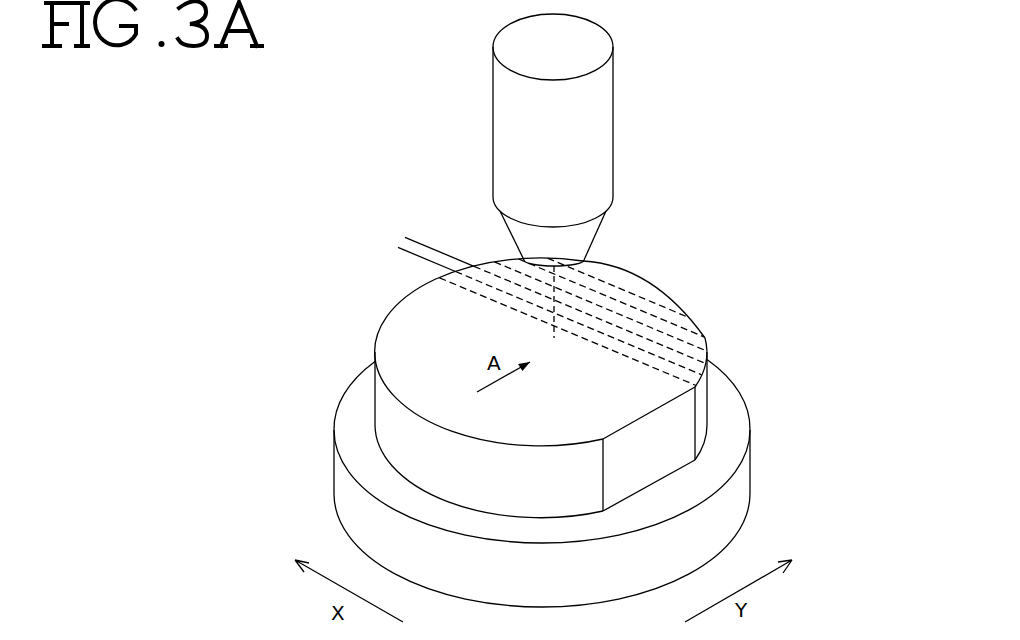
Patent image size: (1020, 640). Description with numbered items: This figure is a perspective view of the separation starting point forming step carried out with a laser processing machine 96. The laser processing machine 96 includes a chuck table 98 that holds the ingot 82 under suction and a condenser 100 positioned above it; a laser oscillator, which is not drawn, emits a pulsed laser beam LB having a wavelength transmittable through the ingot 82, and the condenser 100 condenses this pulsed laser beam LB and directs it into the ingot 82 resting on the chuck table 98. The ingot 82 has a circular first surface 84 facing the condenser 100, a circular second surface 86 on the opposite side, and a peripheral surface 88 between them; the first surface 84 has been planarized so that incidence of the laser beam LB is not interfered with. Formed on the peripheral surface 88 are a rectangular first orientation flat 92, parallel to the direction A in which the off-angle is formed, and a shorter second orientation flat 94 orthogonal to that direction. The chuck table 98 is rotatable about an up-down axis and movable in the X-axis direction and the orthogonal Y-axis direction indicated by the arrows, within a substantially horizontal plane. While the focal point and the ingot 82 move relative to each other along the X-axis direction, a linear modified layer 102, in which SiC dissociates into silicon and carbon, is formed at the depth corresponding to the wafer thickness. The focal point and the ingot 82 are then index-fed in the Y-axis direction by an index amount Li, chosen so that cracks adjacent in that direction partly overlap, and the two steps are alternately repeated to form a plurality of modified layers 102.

The ingot 82 is at (388, 312).
The first surface 84 is at (400, 346).
The second surface 86 is at (382, 453).
The peripheral surface 88 is at (515, 492).
The first orientation flat 92 is at (643, 457).
The second orientation flat 94 is at (632, 272).
The laser processing machine 96 is at (384, 106).
The chuck table 98 is at (367, 515).
The condenser 100 is at (510, 101).
The modified layer 102 is at (692, 354).
The pulsed laser beam LB is at (548, 311).
The index amount Li is at (424, 227).